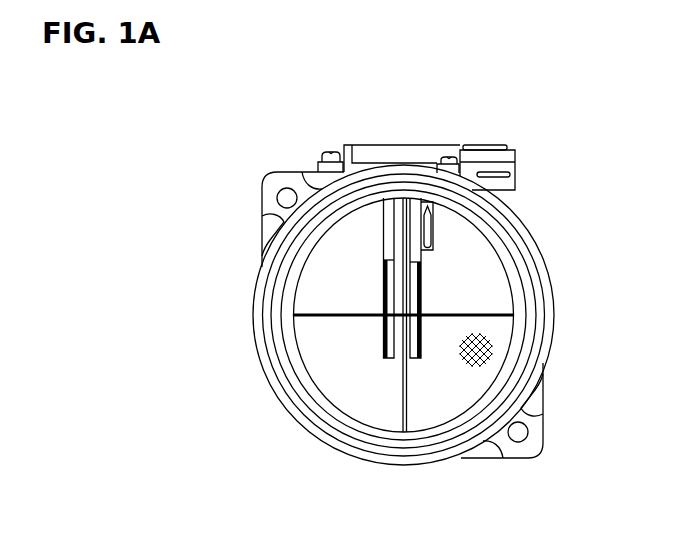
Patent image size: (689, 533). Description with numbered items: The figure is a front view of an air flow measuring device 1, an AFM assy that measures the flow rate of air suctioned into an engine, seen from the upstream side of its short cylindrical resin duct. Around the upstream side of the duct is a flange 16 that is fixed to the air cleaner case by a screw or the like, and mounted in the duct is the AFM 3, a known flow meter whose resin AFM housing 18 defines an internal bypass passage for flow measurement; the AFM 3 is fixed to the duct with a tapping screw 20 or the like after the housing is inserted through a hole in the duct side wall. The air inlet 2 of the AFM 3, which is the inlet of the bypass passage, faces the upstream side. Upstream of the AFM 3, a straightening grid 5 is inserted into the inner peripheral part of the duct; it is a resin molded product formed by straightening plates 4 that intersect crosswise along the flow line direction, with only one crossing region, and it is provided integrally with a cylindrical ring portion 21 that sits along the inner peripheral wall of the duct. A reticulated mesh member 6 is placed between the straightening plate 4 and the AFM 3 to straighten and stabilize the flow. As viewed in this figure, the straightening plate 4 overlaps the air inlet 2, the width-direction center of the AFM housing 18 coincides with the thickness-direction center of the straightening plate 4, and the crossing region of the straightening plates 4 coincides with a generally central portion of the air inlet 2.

The air flow measuring device 1 is at (370, 265).
The air inlet 2 is at (412, 304).
The AFM 3 is at (483, 140).
The straightening plate 4 is at (403, 387).
The straightening grid 5 is at (233, 403).
The mesh member 6 is at (494, 349).
The flange 16 is at (268, 208).
The AFM housing 18 is at (393, 247).
The tapping screw 20 is at (446, 157).
The cylindrical ring portion 21 is at (353, 318).